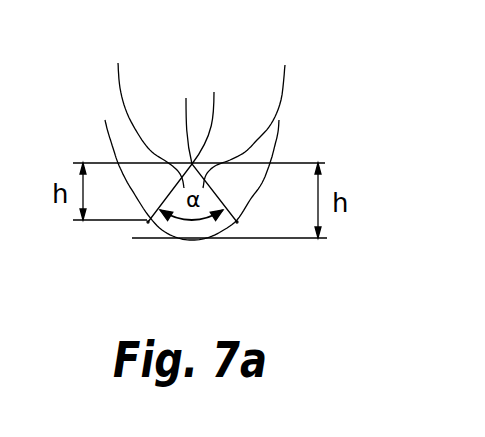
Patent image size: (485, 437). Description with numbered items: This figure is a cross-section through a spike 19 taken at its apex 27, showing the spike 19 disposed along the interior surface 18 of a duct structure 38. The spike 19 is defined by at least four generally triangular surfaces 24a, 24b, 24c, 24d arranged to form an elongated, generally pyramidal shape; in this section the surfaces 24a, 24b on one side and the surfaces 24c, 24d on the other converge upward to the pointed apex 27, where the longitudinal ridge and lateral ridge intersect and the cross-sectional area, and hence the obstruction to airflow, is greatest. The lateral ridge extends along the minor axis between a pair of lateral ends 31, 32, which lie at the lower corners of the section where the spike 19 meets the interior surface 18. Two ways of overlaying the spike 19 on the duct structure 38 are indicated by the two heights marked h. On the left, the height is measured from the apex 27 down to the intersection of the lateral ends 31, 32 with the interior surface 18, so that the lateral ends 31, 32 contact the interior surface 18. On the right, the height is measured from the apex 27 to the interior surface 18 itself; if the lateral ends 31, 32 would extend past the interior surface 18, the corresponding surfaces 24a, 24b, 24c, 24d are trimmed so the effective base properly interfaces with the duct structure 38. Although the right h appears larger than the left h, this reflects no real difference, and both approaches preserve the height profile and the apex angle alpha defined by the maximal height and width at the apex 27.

The interior surface 18 is at (112, 146).
The spike 19 is at (214, 100).
The surface 24a is at (124, 106).
The surface 24b is at (124, 106).
The surface 24c is at (265, 106).
The surface 24d is at (265, 106).
The apex 27 is at (186, 100).
The lateral end 31 is at (148, 222).
The lateral end 32 is at (237, 222).
The duct structure 38 is at (280, 136).